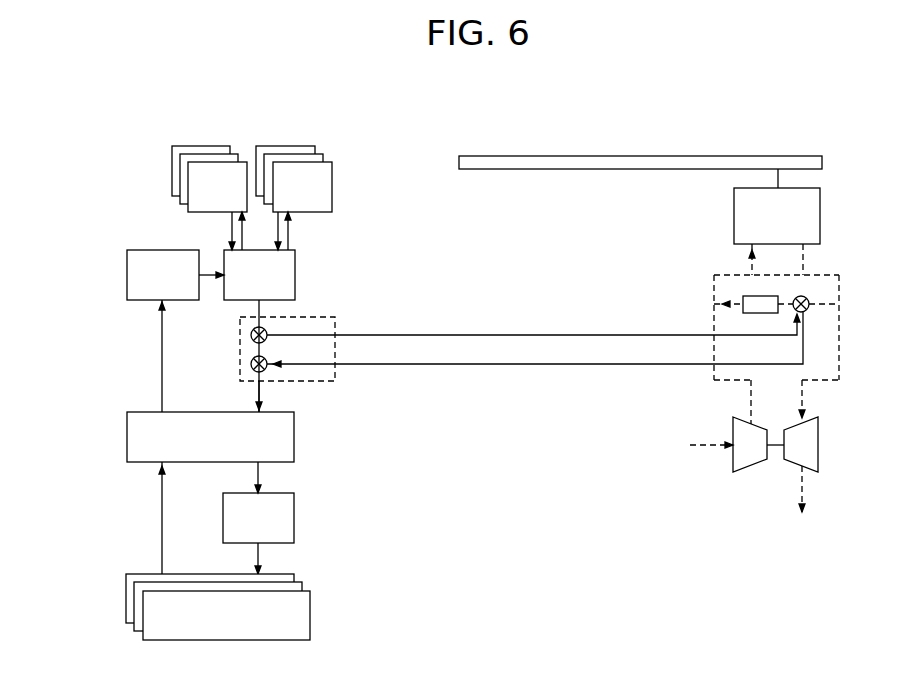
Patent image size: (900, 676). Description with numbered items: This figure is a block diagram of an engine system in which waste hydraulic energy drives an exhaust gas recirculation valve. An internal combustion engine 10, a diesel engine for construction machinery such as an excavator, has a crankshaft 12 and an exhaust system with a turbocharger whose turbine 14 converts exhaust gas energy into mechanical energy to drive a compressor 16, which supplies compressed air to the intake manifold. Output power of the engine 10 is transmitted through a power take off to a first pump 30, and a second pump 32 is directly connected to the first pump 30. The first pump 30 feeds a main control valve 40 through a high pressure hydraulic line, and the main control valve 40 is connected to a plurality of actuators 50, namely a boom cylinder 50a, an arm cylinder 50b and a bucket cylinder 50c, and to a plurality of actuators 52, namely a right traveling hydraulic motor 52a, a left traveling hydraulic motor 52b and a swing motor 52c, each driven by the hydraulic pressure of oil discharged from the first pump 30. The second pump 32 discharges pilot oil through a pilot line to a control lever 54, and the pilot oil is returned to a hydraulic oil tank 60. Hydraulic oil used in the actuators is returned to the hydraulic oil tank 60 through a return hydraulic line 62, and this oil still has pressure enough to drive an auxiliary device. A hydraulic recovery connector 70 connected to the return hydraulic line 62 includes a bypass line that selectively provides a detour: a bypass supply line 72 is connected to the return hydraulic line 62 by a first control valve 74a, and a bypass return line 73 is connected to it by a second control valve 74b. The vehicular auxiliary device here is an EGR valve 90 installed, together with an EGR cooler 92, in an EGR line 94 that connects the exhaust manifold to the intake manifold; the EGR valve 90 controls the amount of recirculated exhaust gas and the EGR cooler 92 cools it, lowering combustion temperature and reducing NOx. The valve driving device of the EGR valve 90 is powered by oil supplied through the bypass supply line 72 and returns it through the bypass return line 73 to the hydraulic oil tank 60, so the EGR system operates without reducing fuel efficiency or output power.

The internal combustion engine 10 is at (820, 212).
The crankshaft 12 is at (822, 163).
The turbine 14 is at (818, 445).
The compressor 16 is at (752, 472).
The first pump 30 is at (127, 275).
The second pump 32 is at (294, 515).
The main control valve 40 is at (295, 262).
The actuators 50 is at (163, 179).
The boom cylinder 50a is at (172, 156).
The arm cylinder 50b is at (180, 178).
The bucket cylinder 50c is at (114, 150).
The actuators 52 is at (340, 169).
The right traveling hydraulic motor 52a is at (315, 147).
The left traveling hydraulic motor 52b is at (323, 156).
The swing motor 52c is at (330, 187).
The control lever 54 is at (310, 613).
The hydraulic oil tank 60 is at (127, 435).
The return hydraulic line 62 is at (258, 392).
The hydraulic recovery connector 70 is at (287, 356).
The bypass supply line 72 is at (318, 335).
The bypass return line 73 is at (320, 364).
The first control valve 74a is at (251, 335).
The second control valve 74b is at (251, 364).
The EGR valve 90 is at (808, 297).
The EGR cooler 92 is at (743, 294).
The EGR line 94 is at (818, 308).